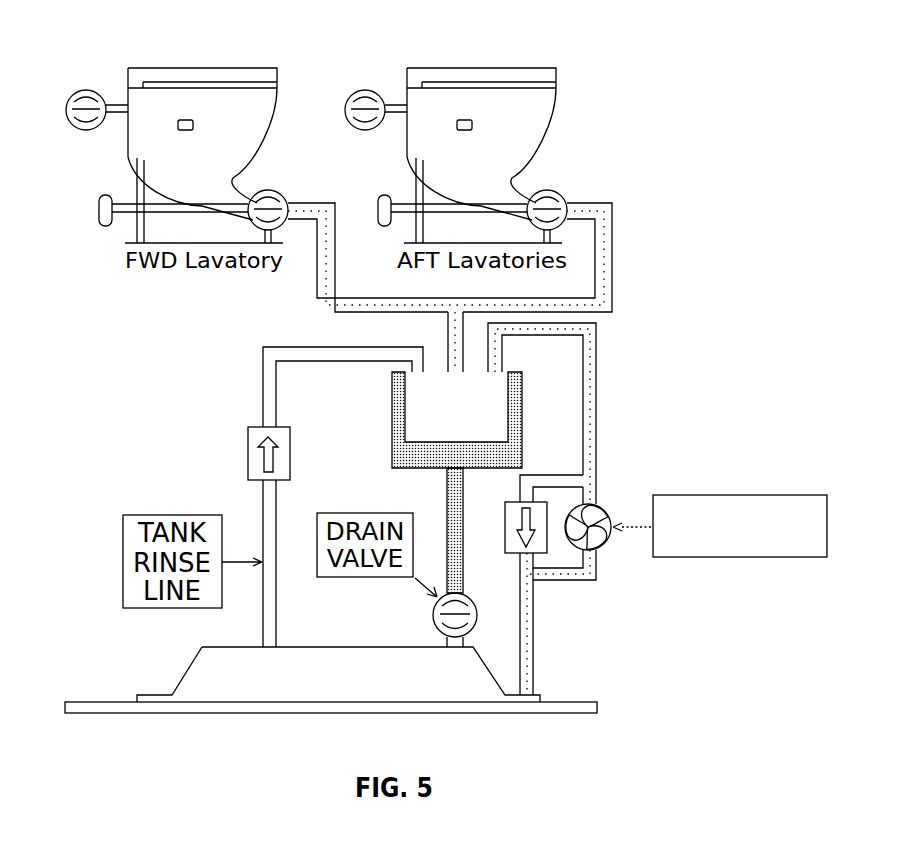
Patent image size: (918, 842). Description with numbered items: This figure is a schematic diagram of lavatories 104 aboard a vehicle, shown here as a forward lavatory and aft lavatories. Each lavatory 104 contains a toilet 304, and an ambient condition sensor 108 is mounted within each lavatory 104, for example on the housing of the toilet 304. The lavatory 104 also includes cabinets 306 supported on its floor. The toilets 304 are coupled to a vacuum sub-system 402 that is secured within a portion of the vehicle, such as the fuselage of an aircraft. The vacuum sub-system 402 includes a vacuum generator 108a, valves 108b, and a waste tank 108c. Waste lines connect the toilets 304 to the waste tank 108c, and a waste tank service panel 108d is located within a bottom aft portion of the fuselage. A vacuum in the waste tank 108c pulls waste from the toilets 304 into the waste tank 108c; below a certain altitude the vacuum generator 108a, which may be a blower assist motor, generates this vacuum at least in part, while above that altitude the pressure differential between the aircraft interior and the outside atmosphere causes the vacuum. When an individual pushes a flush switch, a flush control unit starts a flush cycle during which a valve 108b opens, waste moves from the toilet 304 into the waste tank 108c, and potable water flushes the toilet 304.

The lavatory 104 is at (193, 68).
The ambient condition sensor 108 is at (188, 120).
The vacuum generator 108a is at (757, 495).
The valve 108b is at (75, 131).
The waste tank 108c is at (505, 418).
The waste tank service panel 108d is at (357, 647).
The toilet 304 is at (280, 92).
The cabinets 306 is at (311, 203).
The vacuum sub-system 402 is at (641, 469).